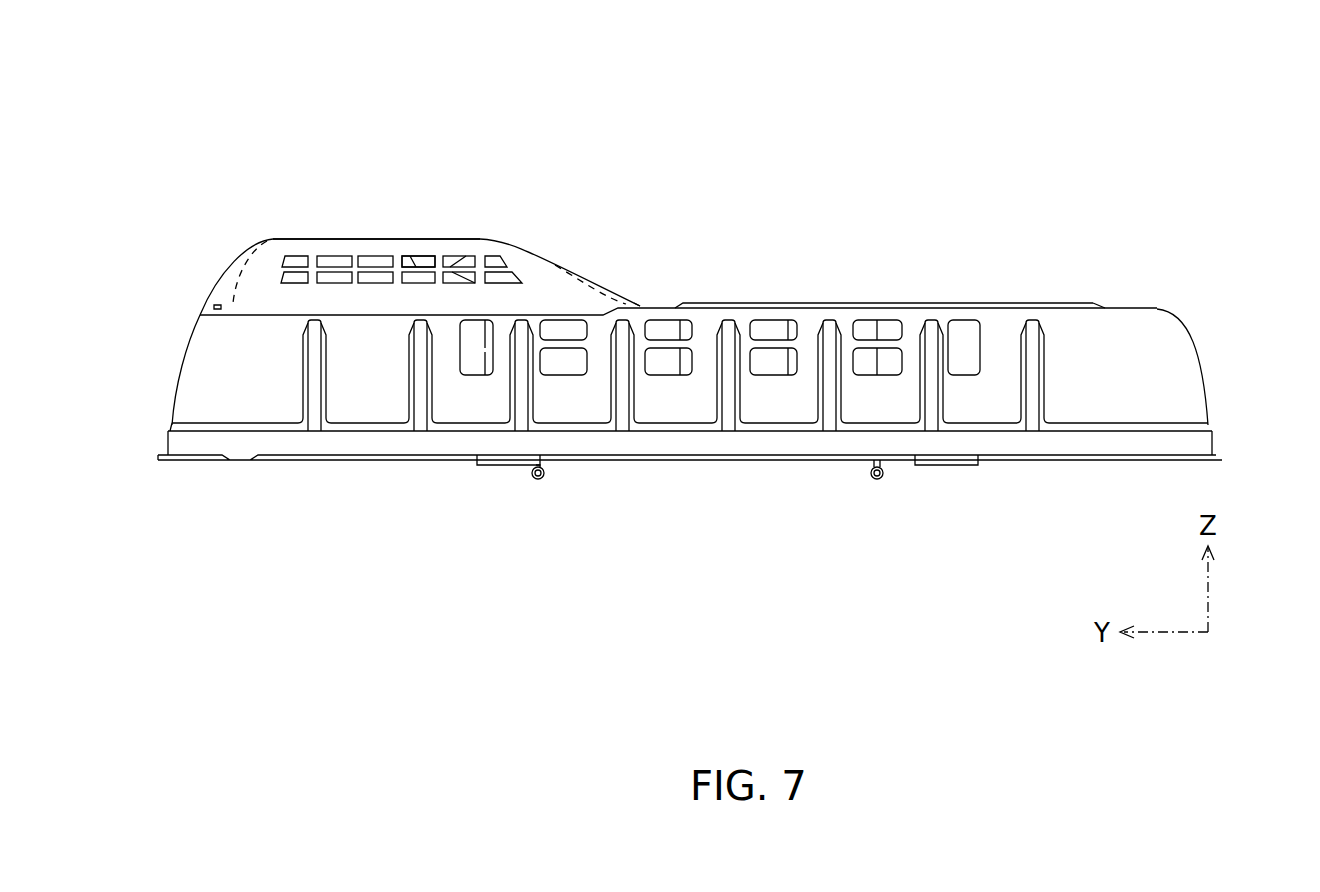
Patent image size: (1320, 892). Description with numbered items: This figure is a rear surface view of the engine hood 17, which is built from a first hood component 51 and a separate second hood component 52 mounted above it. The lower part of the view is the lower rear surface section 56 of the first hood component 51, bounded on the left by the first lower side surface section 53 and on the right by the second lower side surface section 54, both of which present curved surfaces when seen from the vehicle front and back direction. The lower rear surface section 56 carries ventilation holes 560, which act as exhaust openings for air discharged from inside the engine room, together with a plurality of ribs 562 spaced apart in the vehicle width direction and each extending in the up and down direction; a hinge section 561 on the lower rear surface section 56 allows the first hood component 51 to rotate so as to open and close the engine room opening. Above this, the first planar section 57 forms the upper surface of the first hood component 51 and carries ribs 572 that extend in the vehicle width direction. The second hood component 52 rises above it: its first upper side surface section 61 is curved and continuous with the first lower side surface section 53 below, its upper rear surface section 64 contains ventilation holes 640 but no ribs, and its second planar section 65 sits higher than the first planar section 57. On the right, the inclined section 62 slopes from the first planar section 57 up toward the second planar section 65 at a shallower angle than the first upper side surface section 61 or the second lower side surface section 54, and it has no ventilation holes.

The engine hood 17 is at (1084, 160).
The first hood component 51 is at (787, 292).
The second hood component 52 is at (421, 219).
The first lower side surface section 53 is at (178, 378).
The second lower side surface section 54 is at (1205, 368).
The lower rear surface section 56 is at (668, 412).
The first planar section 57 is at (873, 304).
The first upper side surface section 61 is at (235, 258).
The inclined section 62 is at (557, 261).
The upper rear surface section 64 is at (392, 247).
The second planar section 65 is at (317, 234).
The ventilation holes 560 is at (560, 367).
The hinge section 561 is at (498, 463).
The ribs 562 is at (313, 385).
The ribs 572 is at (980, 303).
The ventilation holes 640 is at (372, 256).